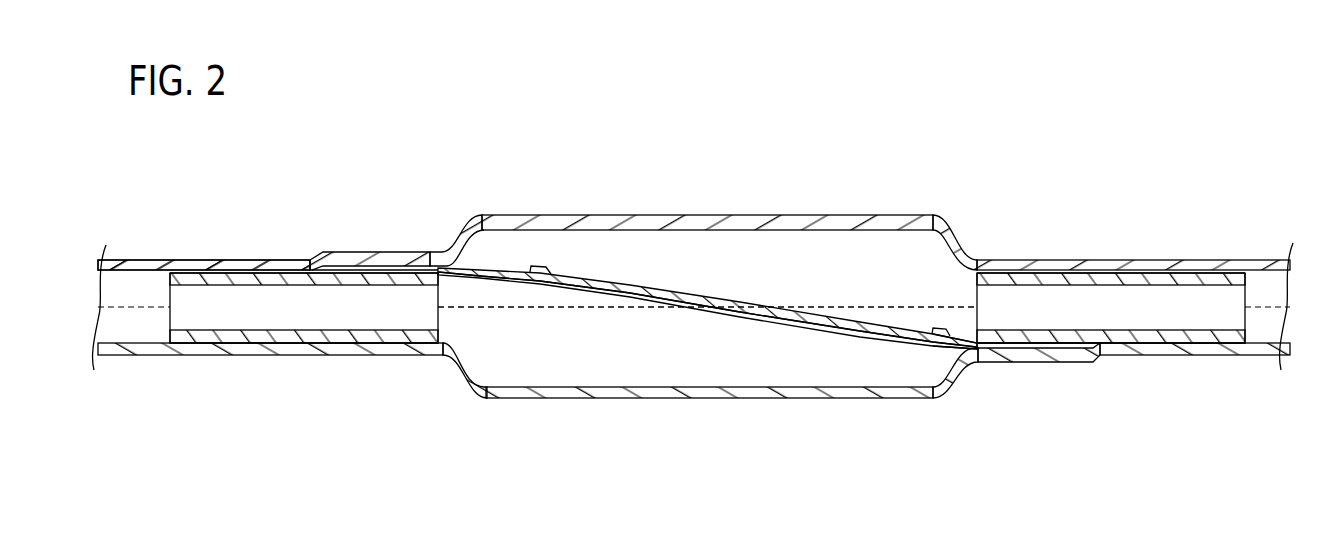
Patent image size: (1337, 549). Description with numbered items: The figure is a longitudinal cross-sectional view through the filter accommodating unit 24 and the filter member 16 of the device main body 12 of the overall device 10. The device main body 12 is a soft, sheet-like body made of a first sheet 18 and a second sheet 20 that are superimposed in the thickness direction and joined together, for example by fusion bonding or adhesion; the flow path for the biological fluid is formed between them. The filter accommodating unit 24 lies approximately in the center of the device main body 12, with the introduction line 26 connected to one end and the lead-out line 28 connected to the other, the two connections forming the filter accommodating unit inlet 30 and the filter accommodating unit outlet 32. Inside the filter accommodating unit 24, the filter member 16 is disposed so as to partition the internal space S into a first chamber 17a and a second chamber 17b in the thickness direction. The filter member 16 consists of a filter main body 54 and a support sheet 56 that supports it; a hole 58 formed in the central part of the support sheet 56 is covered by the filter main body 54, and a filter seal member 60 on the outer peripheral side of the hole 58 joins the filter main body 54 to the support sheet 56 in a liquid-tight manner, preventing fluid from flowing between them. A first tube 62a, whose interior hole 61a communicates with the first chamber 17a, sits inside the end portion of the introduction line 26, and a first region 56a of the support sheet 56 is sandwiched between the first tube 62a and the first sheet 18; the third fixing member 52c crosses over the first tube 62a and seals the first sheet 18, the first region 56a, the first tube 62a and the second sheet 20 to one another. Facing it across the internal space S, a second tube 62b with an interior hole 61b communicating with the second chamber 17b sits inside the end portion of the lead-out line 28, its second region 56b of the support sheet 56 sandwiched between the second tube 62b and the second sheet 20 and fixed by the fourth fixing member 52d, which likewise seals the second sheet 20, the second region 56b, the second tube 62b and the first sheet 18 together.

The medical tube assembly 10 is at (298, 128).
The device main body 12 is at (123, 249).
The filter member 16 is at (787, 291).
The first chamber 17a is at (602, 354).
The second chamber 17b is at (888, 250).
The first sheet 18 is at (145, 285).
The second sheet 20 is at (135, 331).
The filter accommodating unit 24 is at (768, 214).
The introduction line 26 is at (255, 255).
The lead-out line 28 is at (1156, 256).
The filter accommodating unit inlet 30 is at (343, 356).
The filter accommodating unit outlet 32 is at (1045, 259).
The third fixing member 52c is at (421, 257).
The fourth fixing member 52d is at (995, 363).
The filter main body 54 is at (697, 296).
The support sheet 56 is at (933, 347).
The first region 56a is at (373, 260).
The second region 56b is at (1037, 357).
The hole 58 is at (753, 318).
The filter seal member 60 is at (541, 270).
The interior hole 61a is at (263, 309).
The interior hole 61b is at (1147, 307).
The first tube 62a is at (190, 270).
The second tube 62b is at (1094, 267).
The internal space S is at (698, 250).